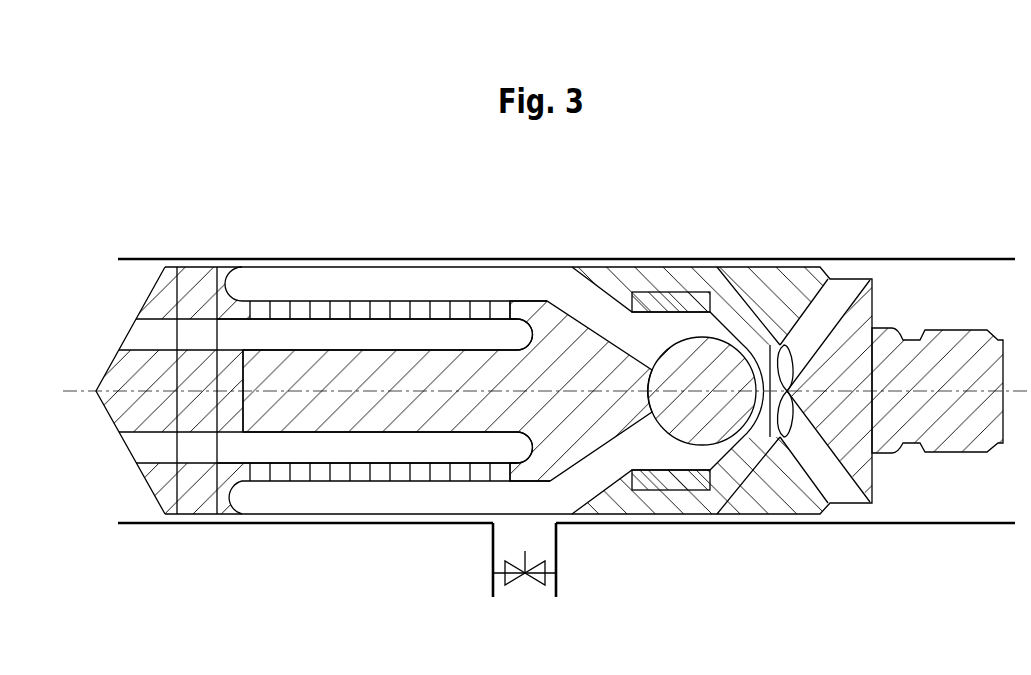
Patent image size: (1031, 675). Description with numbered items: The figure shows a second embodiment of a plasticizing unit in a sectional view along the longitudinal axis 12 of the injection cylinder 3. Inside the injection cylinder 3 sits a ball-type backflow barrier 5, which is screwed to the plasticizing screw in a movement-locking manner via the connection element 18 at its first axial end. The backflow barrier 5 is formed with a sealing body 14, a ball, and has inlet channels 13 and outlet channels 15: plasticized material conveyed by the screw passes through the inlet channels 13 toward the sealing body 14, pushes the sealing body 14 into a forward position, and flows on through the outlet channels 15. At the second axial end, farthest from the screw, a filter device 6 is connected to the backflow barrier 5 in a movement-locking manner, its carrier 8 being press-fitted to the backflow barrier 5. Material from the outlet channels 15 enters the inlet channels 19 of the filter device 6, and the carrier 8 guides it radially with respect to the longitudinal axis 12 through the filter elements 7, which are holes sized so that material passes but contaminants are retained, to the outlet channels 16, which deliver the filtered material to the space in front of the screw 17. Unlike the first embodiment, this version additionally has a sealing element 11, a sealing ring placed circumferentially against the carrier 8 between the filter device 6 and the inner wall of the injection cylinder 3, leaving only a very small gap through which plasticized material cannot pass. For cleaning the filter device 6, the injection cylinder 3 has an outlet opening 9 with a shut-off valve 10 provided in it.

The injection cylinder 3 is at (140, 258).
The backflow barrier 5 is at (793, 228).
The filter device 6 is at (349, 227).
The filter elements 7 is at (440, 318).
The carrier 8 is at (580, 434).
The outlet opening 9 is at (513, 543).
The shut-off valve 10 is at (510, 575).
The sealing element 11 is at (190, 517).
The longitudinal axis 12 is at (82, 390).
The inlet channels 13 is at (845, 292).
The sealing body 14 is at (705, 360).
The outlet channels 15 is at (598, 268).
The outlet channels 16 is at (255, 335).
The space in front of the screw 17 is at (103, 512).
The connection element 18 is at (948, 370).
The inlet channels 19 is at (383, 280).